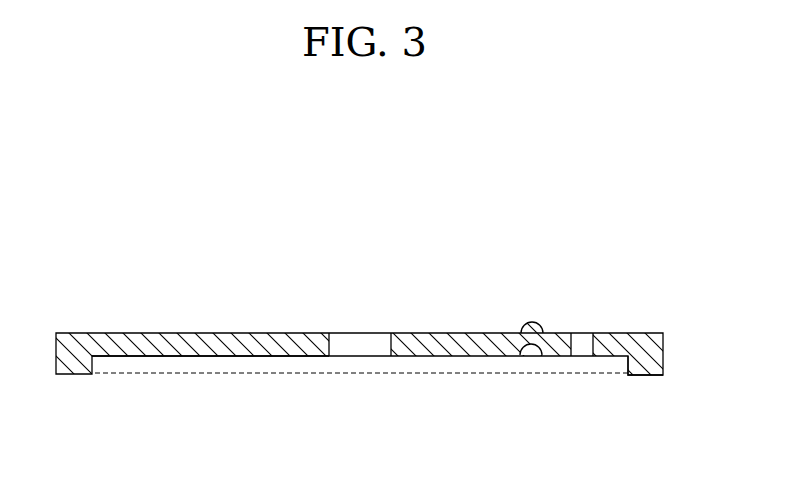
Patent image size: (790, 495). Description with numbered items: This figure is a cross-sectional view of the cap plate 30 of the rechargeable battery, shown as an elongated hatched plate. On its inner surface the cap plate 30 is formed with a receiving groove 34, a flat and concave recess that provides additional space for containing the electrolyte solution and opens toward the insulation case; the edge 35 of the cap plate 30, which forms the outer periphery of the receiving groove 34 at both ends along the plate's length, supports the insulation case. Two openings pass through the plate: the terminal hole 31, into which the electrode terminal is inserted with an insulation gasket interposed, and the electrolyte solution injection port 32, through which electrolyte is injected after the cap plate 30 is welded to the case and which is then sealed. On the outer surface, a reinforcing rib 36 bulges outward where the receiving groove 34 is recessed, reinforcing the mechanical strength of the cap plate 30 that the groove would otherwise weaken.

The cap plate 30 is at (577, 262).
The terminal hole 31 is at (361, 343).
The electrolyte solution injection port 32 is at (582, 333).
The receiving groove 34 is at (218, 363).
The edge 35 is at (645, 375).
The reinforcing rib 36 is at (528, 323).